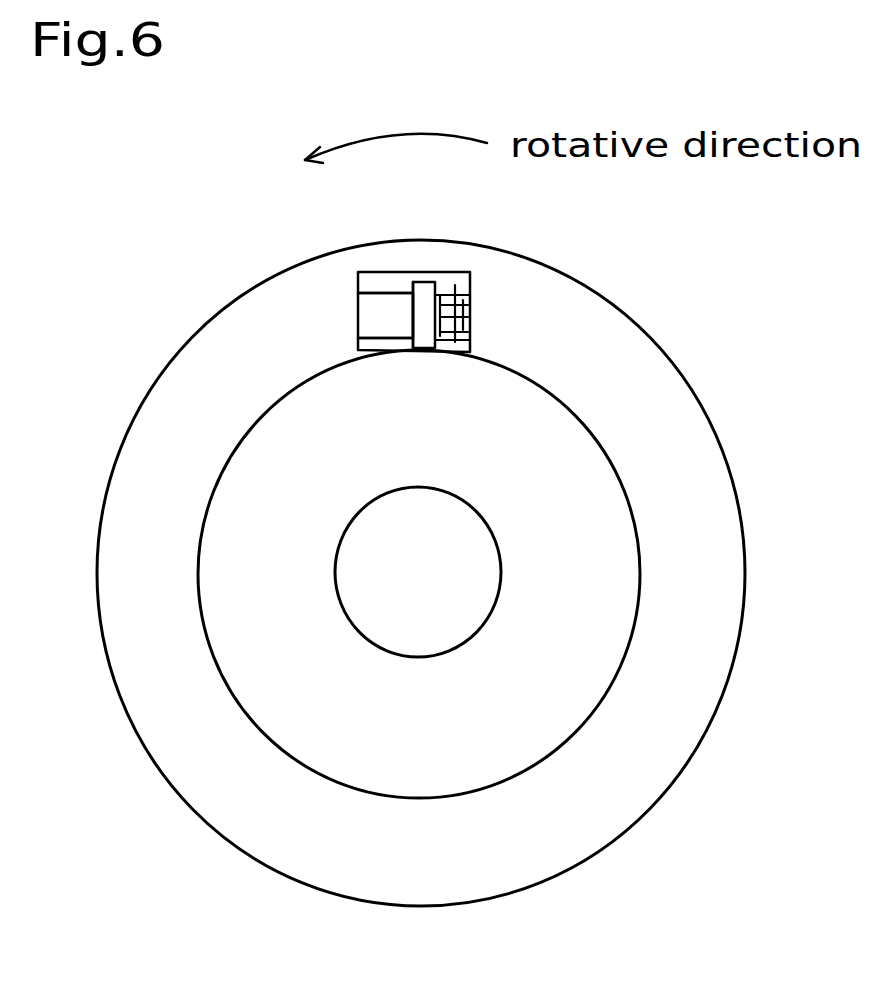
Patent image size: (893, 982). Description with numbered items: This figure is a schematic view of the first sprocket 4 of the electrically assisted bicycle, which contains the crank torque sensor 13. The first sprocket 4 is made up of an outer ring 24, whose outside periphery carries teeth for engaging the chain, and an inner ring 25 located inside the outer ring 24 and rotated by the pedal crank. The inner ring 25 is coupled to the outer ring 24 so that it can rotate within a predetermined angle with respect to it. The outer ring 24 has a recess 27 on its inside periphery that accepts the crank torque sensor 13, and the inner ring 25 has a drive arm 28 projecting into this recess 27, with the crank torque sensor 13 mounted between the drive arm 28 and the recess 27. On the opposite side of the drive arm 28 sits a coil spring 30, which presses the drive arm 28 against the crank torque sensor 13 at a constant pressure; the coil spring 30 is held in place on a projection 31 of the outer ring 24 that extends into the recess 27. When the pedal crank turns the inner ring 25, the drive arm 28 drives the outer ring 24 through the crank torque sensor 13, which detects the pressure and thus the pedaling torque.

The first sprocket 4 is at (452, 544).
The crank torque sensor 13 is at (377, 310).
The outer ring 24 is at (668, 403).
The inner ring 25 is at (618, 568).
The recess 27 is at (410, 255).
The drive arm 28 is at (429, 282).
The coil spring 30 is at (447, 350).
The projection 31 is at (453, 297).